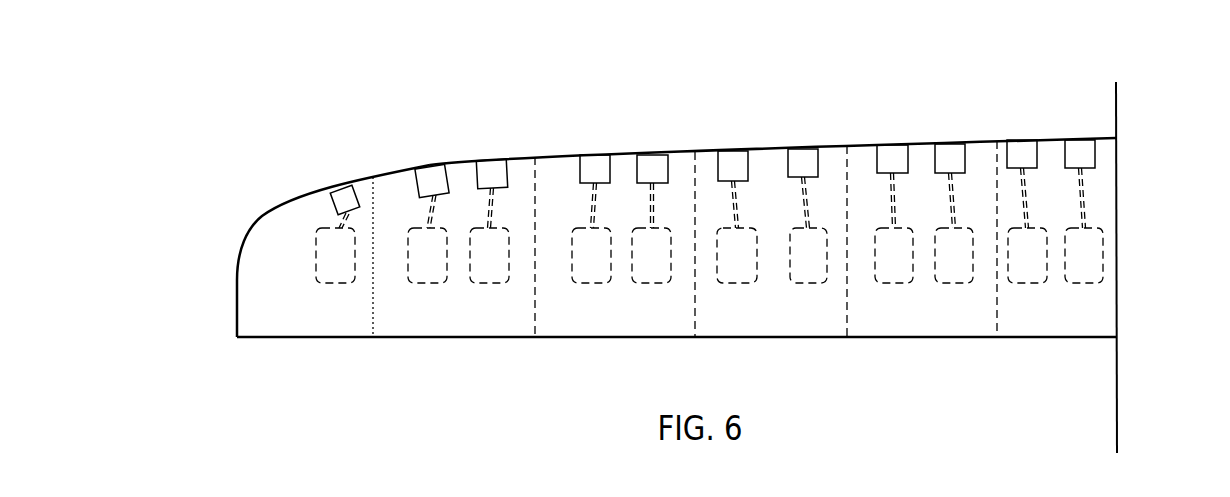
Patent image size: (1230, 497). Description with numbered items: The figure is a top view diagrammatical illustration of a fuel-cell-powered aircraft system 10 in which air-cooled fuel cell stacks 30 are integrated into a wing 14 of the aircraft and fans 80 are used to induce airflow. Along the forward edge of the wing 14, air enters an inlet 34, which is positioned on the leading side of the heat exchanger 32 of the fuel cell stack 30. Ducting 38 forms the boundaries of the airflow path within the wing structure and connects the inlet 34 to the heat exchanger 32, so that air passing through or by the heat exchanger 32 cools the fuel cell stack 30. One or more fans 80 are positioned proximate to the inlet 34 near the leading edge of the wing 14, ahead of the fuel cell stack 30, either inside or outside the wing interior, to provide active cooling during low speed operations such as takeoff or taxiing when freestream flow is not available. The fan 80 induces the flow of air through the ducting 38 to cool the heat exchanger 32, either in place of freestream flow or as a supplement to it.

The fuel-cell-powered aircraft system 10 is at (613, 246).
The wing 14 is at (233, 278).
The fuel cell stack 30 is at (522, 241).
The heat exchanger 32 is at (493, 250).
The inlet 34 is at (499, 153).
The ducting 38 is at (495, 205).
The fan 80 is at (1098, 148).